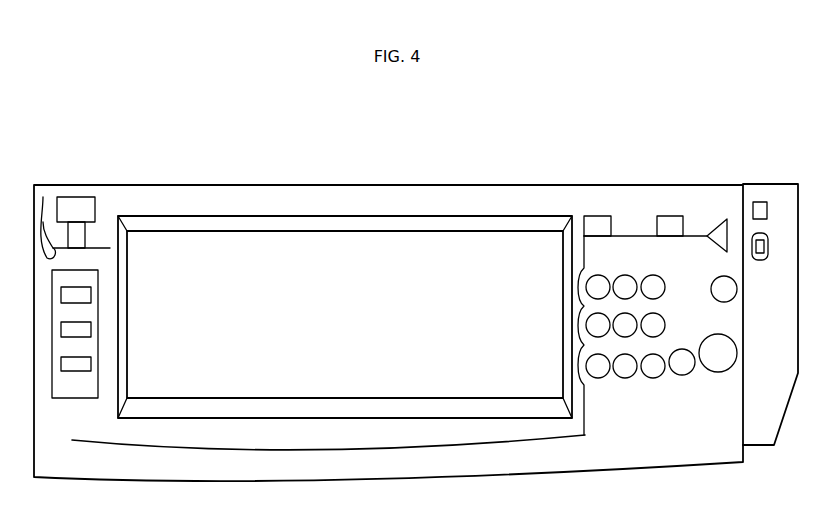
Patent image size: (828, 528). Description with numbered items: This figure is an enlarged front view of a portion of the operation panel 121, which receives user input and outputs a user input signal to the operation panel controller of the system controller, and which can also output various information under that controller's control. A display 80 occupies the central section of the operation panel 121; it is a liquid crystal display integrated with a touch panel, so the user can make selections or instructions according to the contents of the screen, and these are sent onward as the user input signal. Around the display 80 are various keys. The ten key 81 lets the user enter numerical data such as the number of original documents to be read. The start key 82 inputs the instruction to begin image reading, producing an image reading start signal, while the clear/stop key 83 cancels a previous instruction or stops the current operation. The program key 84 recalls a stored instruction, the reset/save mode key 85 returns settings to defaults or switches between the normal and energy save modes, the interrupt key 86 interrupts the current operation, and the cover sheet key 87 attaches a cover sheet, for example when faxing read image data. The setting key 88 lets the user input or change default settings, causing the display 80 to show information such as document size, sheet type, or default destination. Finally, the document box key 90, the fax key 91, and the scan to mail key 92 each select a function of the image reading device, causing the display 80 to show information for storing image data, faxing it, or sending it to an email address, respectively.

The operation panel 121 is at (664, 168).
The display 80 is at (244, 242).
The ten key 81 is at (624, 383).
The start key 82 is at (717, 372).
The clear/stop key 83 is at (678, 375).
The program key 84 is at (602, 216).
The reset/save mode key 85 is at (671, 216).
The interrupt key 86 is at (724, 219).
The cover sheet key 87 is at (713, 283).
The setting key 88 is at (80, 234).
The document box key 90 is at (61, 294).
The fax key 91 is at (61, 328).
The scan to mail key 92 is at (61, 362).